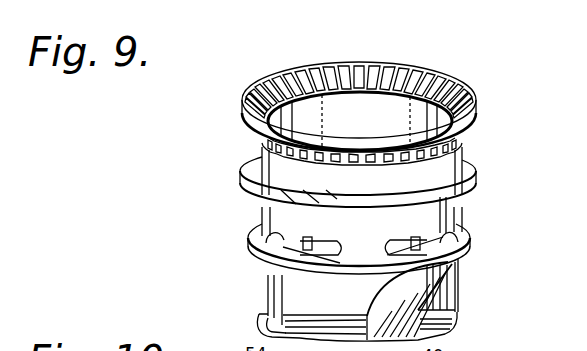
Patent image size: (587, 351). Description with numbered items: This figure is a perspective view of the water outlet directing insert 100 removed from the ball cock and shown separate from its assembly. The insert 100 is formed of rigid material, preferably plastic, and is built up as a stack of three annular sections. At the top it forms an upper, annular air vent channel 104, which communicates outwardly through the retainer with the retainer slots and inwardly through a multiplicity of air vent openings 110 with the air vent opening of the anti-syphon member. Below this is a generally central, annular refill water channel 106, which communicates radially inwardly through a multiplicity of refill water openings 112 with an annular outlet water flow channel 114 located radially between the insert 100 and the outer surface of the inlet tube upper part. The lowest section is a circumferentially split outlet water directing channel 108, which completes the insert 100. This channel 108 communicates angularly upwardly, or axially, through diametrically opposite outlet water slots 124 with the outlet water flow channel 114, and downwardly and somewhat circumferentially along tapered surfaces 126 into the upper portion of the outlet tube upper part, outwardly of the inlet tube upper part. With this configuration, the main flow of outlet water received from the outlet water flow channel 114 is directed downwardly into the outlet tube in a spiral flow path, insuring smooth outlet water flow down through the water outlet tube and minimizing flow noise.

The water outlet directing insert 100 is at (443, 217).
The air vent channel 104 is at (257, 172).
The refill water channel 106 is at (253, 217).
The outlet water directing channel 108 is at (273, 295).
The air vent openings 110 is at (326, 68).
The refill water openings 112 is at (247, 237).
The outlet water flow channel 114 is at (412, 122).
The outlet water slots 124 is at (443, 285).
The tapered surfaces 126 is at (267, 275).